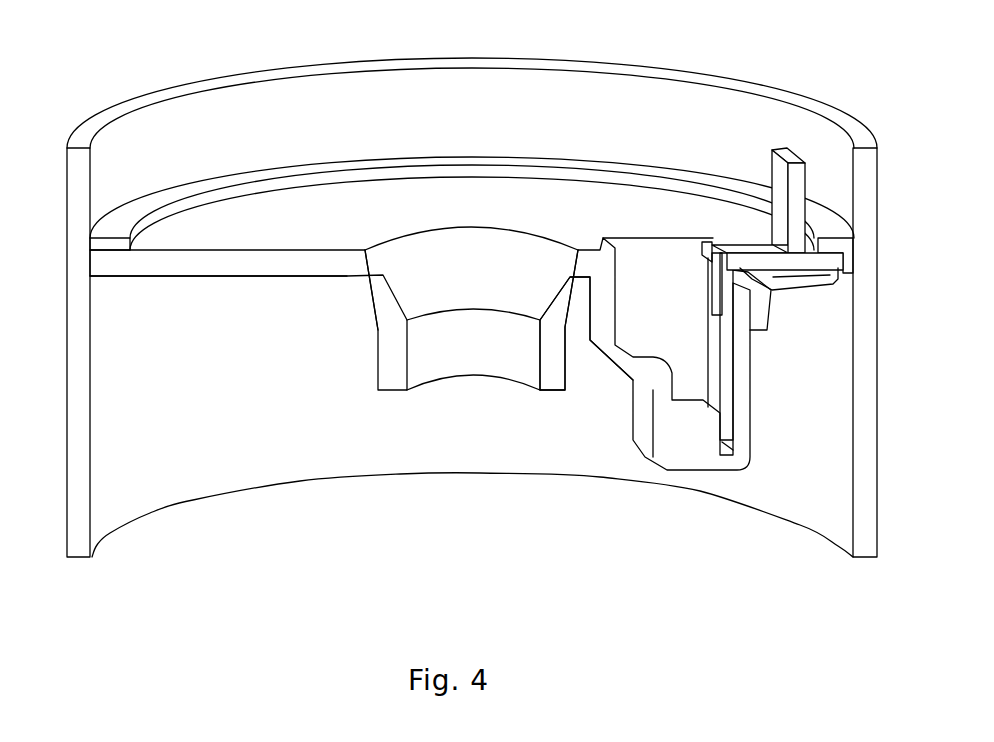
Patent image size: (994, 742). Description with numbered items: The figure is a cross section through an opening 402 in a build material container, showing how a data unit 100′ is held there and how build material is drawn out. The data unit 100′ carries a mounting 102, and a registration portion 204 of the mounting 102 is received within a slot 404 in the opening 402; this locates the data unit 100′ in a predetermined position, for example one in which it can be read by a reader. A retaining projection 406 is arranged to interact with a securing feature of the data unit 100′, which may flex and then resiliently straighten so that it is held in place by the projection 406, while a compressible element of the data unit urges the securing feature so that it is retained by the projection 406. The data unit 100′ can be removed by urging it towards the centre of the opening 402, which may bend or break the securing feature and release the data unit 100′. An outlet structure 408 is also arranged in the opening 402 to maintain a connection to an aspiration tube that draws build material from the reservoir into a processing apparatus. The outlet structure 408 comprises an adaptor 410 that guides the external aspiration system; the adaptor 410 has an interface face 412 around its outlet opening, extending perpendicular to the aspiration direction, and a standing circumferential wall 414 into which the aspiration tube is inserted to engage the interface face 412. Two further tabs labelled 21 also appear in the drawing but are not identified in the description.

The opening 402 is at (440, 248).
The standing circumferential wall 414 is at (413, 68).
The interface face 412 is at (537, 193).
The outlet structure 408 is at (213, 276).
The adaptor 410 is at (360, 293).
The data unit 100′ is at (730, 224).
The mounting 102 is at (745, 245).
The registration portion 204 is at (728, 392).
The slot 404 is at (727, 440).
The retaining projection 406 is at (760, 297).
The contact tabs 21 is at (840, 261).